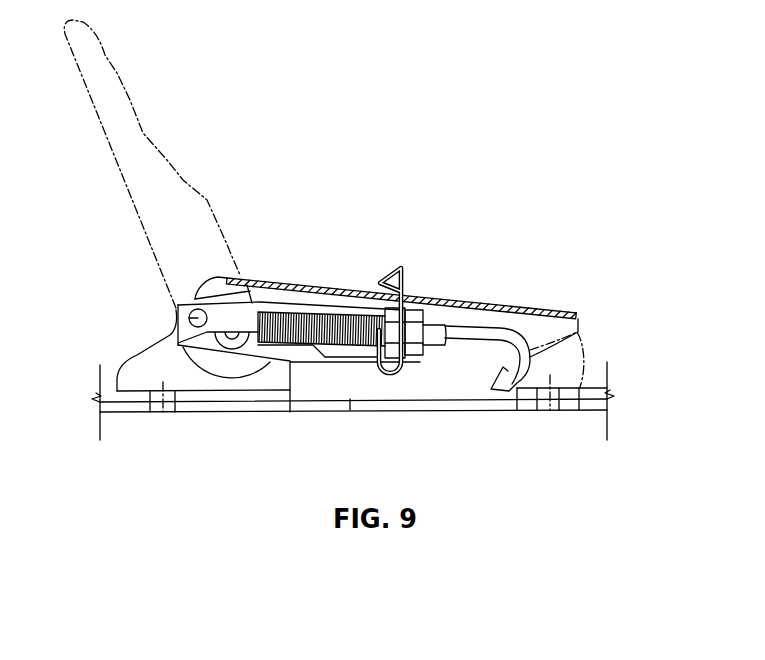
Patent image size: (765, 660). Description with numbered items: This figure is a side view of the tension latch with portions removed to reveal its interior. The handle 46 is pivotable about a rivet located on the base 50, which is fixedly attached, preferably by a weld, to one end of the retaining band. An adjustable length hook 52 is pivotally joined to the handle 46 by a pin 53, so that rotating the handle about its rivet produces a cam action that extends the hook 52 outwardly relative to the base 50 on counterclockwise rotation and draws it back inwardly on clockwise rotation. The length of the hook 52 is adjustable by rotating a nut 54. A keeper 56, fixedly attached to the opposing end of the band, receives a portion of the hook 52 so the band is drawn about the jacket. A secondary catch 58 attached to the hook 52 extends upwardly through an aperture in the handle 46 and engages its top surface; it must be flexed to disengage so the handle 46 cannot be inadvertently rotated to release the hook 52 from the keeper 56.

The base 50 is at (137, 355).
The pin 53 is at (177, 313).
The handle 46 is at (328, 287).
The nut 54 is at (405, 362).
The secondary catch 58 is at (404, 266).
The adjustable length hook 52 is at (576, 336).
The keeper 56 is at (611, 401).